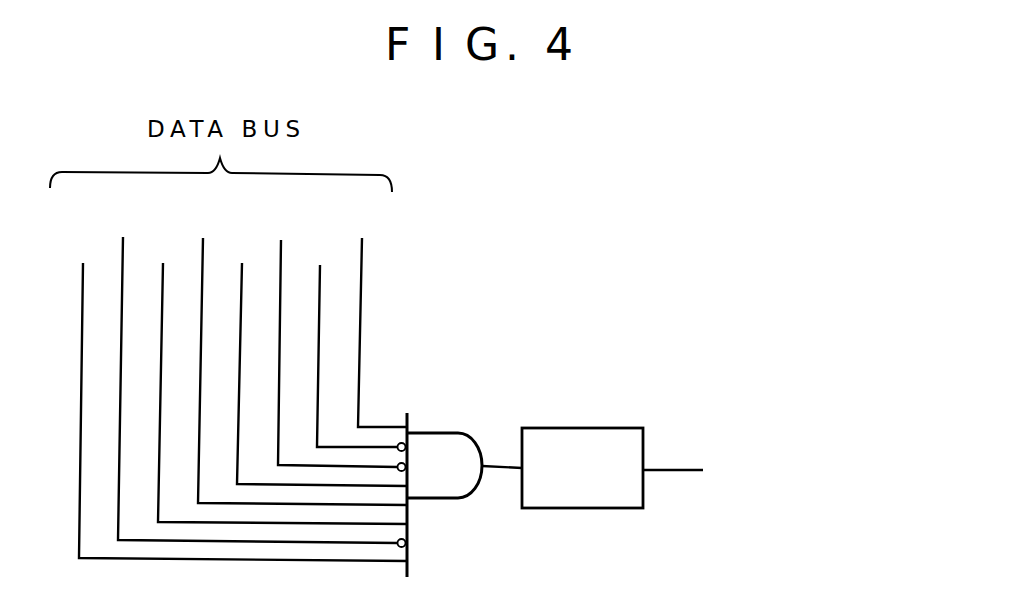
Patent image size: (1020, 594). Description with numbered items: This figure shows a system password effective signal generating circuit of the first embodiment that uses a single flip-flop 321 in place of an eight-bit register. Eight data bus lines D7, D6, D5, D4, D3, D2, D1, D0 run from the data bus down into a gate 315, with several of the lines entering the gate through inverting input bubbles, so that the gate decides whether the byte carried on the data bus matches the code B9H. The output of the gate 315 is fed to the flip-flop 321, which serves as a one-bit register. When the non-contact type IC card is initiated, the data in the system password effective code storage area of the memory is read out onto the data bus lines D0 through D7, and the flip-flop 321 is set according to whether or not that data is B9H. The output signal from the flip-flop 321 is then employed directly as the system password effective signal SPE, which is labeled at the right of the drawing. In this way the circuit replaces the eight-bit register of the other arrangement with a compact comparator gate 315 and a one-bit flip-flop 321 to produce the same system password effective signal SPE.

The AND gate 315 is at (448, 440).
The flip-flop 321 is at (622, 437).
The data bus line D0 is at (376, 314).
The data bus line D1 is at (354, 336).
The data bus line D2 is at (335, 336).
The data bus line D3 is at (316, 354).
The data bus line D4 is at (297, 353).
The data bus line D5 is at (276, 372).
The data bus line D6 is at (256, 374).
The data bus line D7 is at (237, 390).
The system password effective signal SPE is at (766, 483).